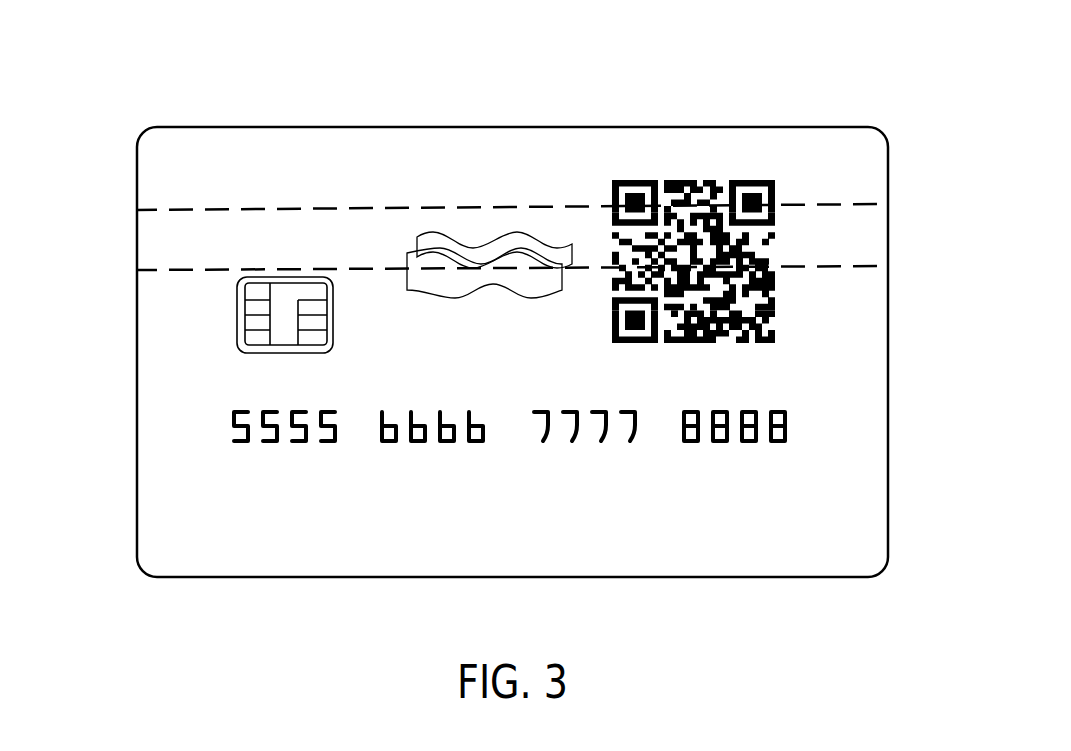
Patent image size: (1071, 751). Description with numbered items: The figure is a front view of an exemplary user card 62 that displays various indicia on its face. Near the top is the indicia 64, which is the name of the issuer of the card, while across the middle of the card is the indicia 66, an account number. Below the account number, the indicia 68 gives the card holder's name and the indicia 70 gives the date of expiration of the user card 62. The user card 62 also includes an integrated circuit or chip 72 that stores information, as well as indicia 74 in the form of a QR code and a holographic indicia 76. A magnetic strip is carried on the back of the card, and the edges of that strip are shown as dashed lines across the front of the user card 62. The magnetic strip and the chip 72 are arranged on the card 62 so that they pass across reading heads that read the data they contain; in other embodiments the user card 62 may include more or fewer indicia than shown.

The user card 62 is at (97, 72).
The indicia 64 is at (250, 166).
The indicia 66 is at (214, 433).
The indicia 68 is at (335, 532).
The indicia 70 is at (686, 529).
The chip 72 is at (217, 292).
The indicia 74 is at (786, 235).
The holographic indicia 76 is at (482, 217).